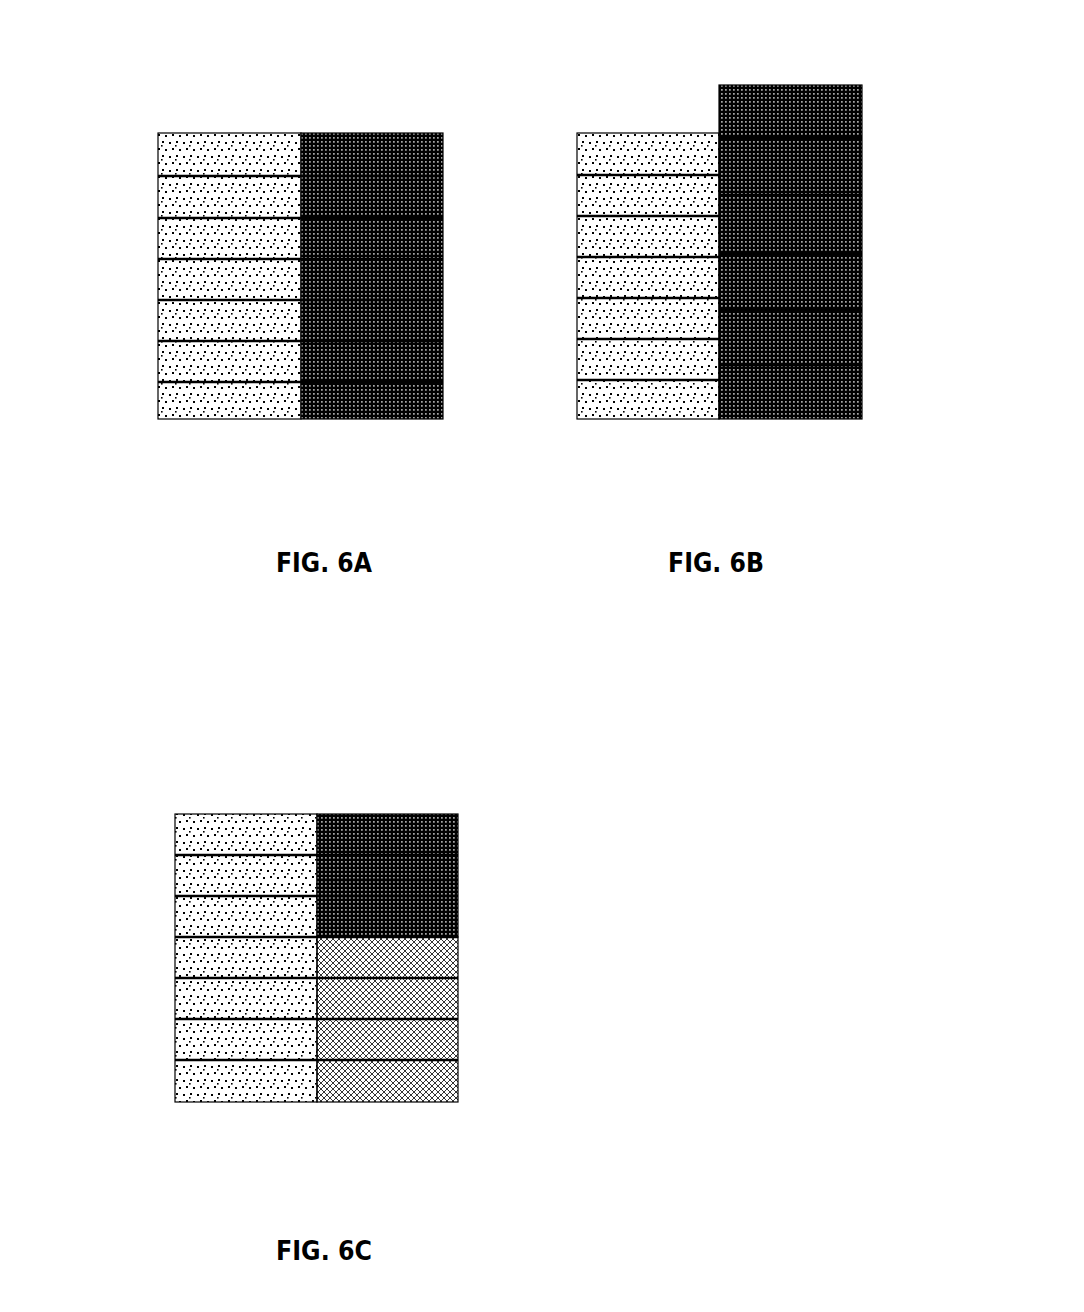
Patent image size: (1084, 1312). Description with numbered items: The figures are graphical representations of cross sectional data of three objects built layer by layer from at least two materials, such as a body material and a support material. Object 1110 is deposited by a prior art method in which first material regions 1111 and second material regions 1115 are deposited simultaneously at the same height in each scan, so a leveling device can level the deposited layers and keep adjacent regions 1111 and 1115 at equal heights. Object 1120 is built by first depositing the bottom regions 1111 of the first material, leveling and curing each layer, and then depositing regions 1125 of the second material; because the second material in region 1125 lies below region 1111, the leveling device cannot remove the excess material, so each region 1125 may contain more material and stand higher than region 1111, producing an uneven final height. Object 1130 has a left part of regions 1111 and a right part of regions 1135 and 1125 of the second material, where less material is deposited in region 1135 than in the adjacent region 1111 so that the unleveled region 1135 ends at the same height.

In FIG. 6A, the object 1110 is at (275, 123).
In FIG. 6A, the first material regions 1111 is at (175, 160).
In FIG. 6B, the first material regions 1111 is at (604, 408).
In FIG. 6C, the first material regions 1111 is at (198, 1077).
In FIG. 6A, the second material regions 1115 is at (438, 160).
In FIG. 6B, the object 1120 is at (677, 110).
In FIG. 6B, the second material region 1125 is at (848, 124).
In FIG. 6C, the second material region 1125 is at (447, 850).
In FIG. 6C, the object 1130 is at (280, 799).
In FIG. 6C, the second material region 1135 is at (447, 965).